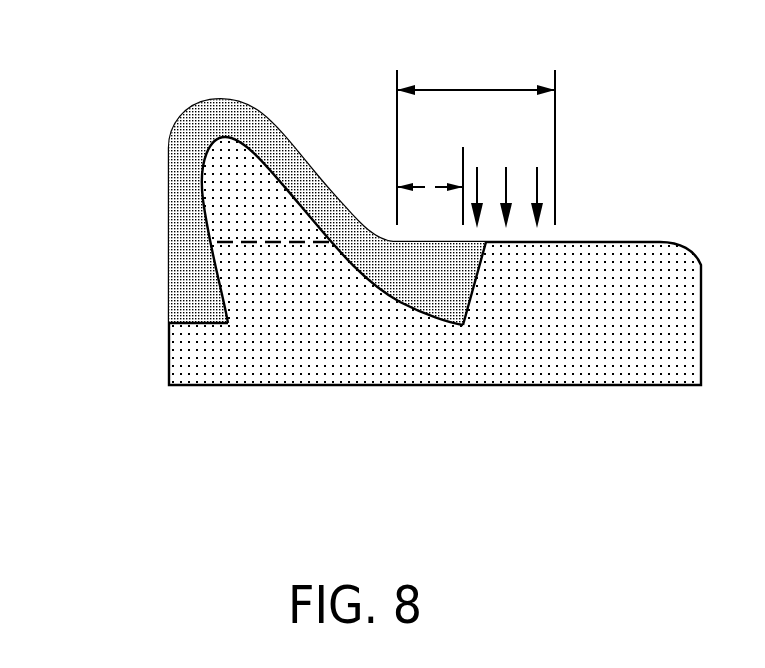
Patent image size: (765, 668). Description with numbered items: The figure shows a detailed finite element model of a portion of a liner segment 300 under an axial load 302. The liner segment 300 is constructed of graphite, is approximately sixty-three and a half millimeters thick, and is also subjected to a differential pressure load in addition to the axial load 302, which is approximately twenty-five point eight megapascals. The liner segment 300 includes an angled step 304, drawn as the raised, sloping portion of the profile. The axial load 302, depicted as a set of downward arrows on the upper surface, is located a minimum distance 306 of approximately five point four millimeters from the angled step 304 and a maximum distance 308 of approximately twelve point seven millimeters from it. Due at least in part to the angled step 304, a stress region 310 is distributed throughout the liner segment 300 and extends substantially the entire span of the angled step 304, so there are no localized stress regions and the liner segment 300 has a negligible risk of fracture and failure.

The liner segment 300 is at (260, 302).
The axial load 302 is at (477, 180).
The angled step 304 is at (228, 182).
The minimum distance 306 is at (430, 186).
The maximum distance 308 is at (478, 88).
The stress region 310 is at (417, 298).